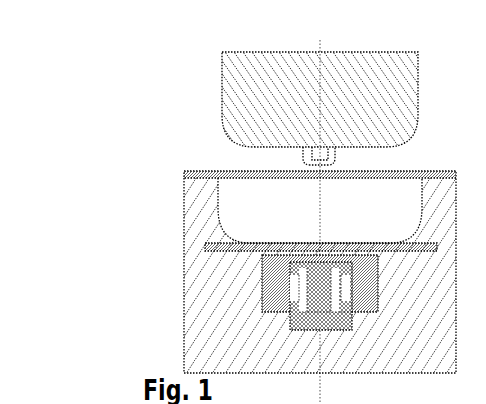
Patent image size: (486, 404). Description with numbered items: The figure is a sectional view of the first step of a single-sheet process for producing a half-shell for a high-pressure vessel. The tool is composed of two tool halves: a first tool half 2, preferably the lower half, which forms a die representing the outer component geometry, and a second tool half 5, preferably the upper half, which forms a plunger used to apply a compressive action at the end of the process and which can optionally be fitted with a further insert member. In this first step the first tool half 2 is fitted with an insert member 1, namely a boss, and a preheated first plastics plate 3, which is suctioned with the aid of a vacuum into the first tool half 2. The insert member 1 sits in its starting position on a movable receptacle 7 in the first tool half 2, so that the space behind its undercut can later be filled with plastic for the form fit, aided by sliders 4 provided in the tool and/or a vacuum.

The insert member 1 is at (298, 286).
The first tool half 2 is at (208, 336).
The first plastics plate 3 is at (235, 174).
The sliders 4 is at (215, 247).
The second tool half 5 is at (252, 104).
The movable receptacle 7 is at (272, 304).